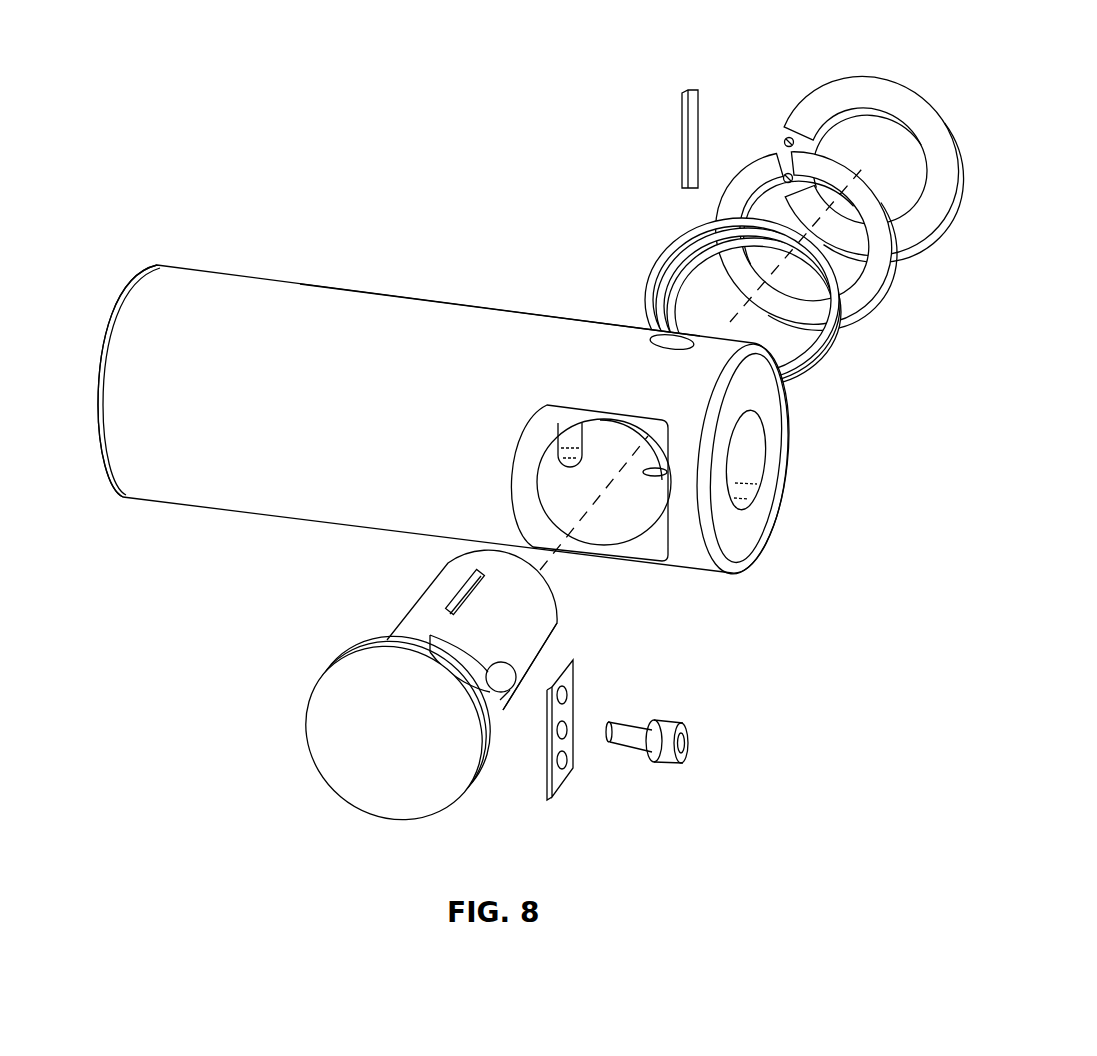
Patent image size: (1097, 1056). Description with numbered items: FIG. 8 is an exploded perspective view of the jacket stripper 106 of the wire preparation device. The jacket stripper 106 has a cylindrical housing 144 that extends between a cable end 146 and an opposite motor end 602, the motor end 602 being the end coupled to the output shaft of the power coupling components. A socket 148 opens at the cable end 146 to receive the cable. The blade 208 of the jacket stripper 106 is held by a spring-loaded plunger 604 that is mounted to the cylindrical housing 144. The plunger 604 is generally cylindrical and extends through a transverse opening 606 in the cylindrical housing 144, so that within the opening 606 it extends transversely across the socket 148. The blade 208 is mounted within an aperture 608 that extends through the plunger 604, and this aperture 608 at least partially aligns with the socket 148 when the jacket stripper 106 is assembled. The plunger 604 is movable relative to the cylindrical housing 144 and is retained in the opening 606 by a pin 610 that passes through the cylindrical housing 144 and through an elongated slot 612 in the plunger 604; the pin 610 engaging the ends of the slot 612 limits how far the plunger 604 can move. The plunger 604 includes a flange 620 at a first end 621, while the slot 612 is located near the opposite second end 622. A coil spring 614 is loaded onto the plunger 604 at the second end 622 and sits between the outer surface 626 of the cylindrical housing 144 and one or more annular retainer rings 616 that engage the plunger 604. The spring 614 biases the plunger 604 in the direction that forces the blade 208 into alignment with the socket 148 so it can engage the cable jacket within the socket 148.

The jacket stripper 106 is at (320, 58).
The cylindrical housing 144 is at (338, 315).
The cable end 146 is at (750, 527).
The socket 148 is at (741, 465).
The blade 208 is at (567, 768).
The motor end 602 is at (97, 427).
The spring-loaded plunger 604 is at (403, 633).
The transverse opening 606 is at (617, 520).
The aperture 608 is at (495, 704).
The pin 610 is at (690, 130).
The elongated slot 612 is at (455, 586).
The coil spring 614 is at (667, 256).
The annular retainer rings 616 is at (827, 103).
The flange 620 is at (353, 727).
The first end 621 is at (321, 769).
The second end 622 is at (555, 597).
The outer surface 626 is at (547, 328).